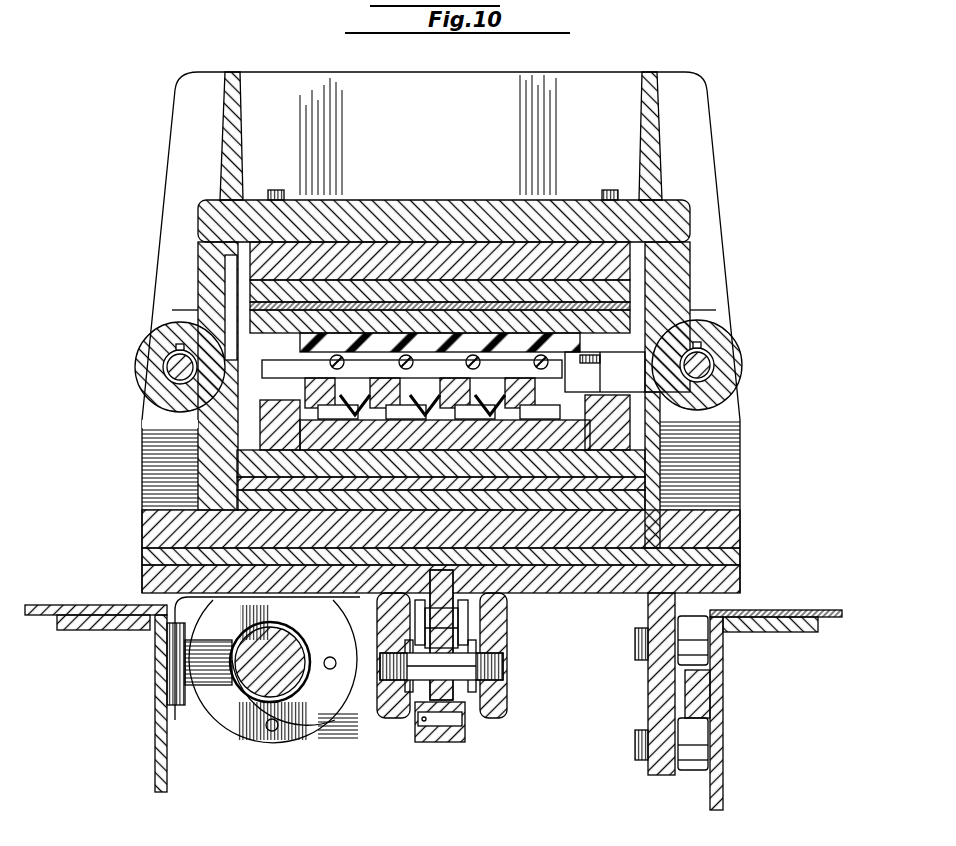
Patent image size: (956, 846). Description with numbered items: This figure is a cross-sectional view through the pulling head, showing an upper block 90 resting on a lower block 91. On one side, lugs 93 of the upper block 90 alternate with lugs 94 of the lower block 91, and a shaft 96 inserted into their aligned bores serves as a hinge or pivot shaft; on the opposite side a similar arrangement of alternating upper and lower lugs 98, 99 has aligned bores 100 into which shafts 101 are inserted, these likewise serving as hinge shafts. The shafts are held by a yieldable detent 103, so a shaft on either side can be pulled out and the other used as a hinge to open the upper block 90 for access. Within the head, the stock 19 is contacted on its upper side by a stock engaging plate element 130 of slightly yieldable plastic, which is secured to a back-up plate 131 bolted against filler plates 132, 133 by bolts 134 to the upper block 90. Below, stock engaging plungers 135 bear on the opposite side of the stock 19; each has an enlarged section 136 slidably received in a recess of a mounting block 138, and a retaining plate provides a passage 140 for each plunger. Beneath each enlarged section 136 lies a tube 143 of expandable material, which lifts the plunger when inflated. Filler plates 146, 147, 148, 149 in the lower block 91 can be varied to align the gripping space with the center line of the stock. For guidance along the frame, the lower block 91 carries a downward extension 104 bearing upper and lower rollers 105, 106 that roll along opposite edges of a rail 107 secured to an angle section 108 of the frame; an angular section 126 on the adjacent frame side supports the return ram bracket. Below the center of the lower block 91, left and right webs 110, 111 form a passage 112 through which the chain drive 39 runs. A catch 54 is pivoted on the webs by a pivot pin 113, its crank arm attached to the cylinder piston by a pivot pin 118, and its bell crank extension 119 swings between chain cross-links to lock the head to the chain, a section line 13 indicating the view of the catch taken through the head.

The section line 13- 13 is at (233, 22).
The stock 19 is at (480, 362).
The chain drive 39 is at (472, 632).
The catch 54 is at (455, 688).
The upper block 90 is at (690, 262).
The lower block 91 is at (705, 498).
The lugs 93 is at (725, 352).
The lugs 94 is at (738, 438).
The shaft 96 is at (700, 348).
The upper lugs 98 is at (157, 348).
The lower lugs 99 is at (160, 440).
The bores 100 is at (172, 370).
The shafts 101 is at (183, 375).
The yieldable detent 103 is at (168, 345).
The downward extension 104 is at (665, 700).
The upper roller 105 is at (706, 650).
The lower roller 106 is at (710, 745).
The rail 107 is at (708, 693).
The angle section 108 is at (818, 632).
The left-hand web 110 is at (392, 718).
The right-hand web 111 is at (508, 648).
The passage 112 is at (468, 618).
The pivot pin 113 is at (508, 670).
The pivot pin 118 is at (440, 745).
The bell crank extension 119 is at (441, 582).
The angular section 126 is at (150, 635).
The stock engaging plate element 130 is at (328, 342).
The back-up plate 131 is at (385, 292).
The filler plate 132 is at (437, 290).
The filler plate 133 is at (498, 258).
The bolts 134 is at (235, 216).
The stock engaging plungers 135 is at (395, 385).
The enlarged section 136 is at (457, 400).
The mounting block 138 is at (343, 450).
The passage 140 is at (318, 395).
The tube 143 is at (468, 440).
The filler plate 146 is at (240, 470).
The filler plate 147 is at (240, 486).
The filler plate 148 is at (240, 500).
The filler plate 149 is at (250, 530).